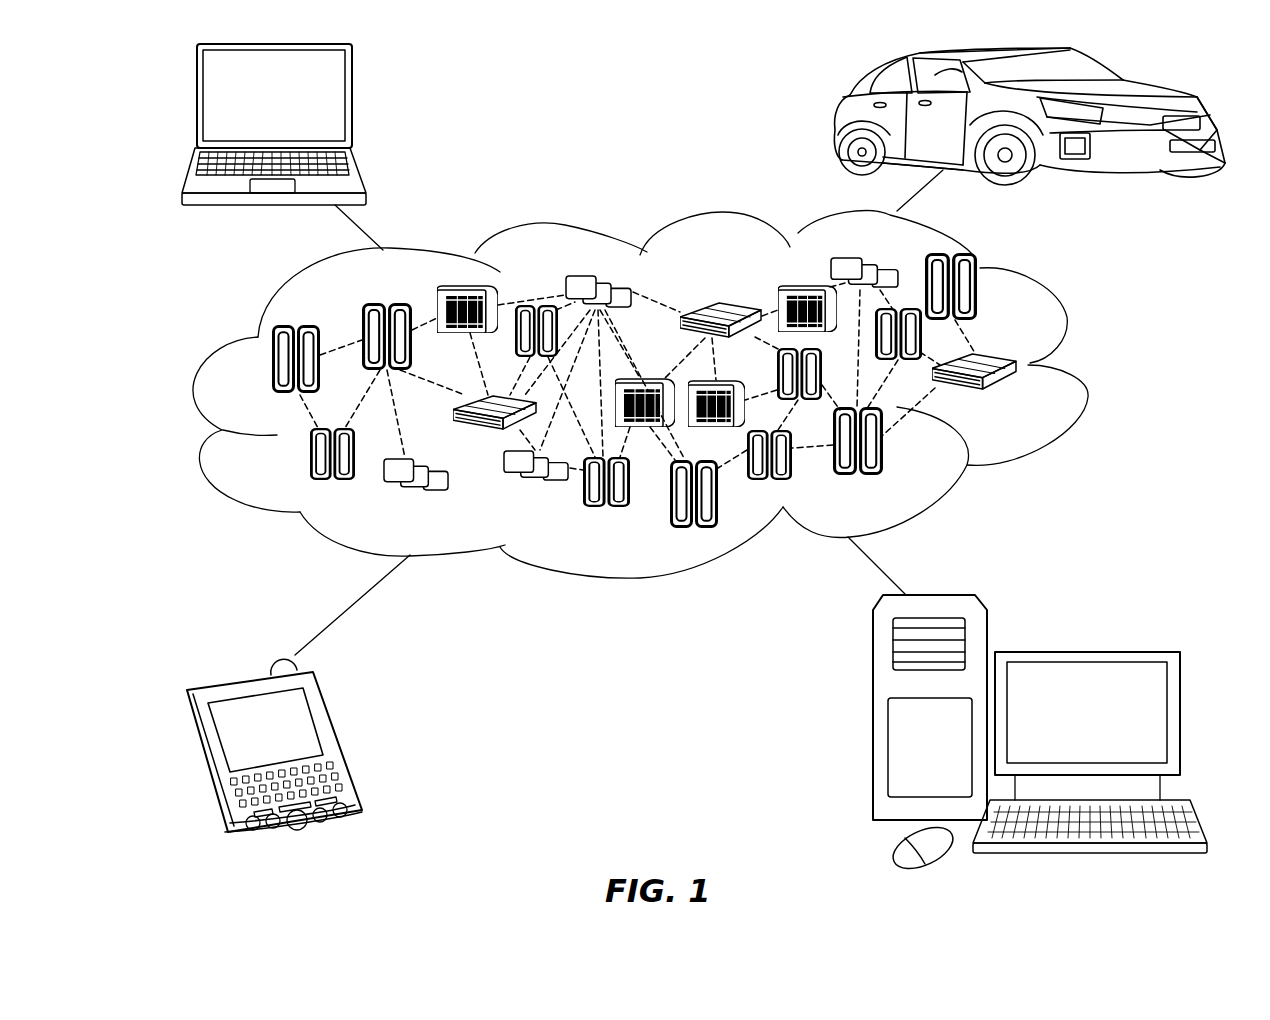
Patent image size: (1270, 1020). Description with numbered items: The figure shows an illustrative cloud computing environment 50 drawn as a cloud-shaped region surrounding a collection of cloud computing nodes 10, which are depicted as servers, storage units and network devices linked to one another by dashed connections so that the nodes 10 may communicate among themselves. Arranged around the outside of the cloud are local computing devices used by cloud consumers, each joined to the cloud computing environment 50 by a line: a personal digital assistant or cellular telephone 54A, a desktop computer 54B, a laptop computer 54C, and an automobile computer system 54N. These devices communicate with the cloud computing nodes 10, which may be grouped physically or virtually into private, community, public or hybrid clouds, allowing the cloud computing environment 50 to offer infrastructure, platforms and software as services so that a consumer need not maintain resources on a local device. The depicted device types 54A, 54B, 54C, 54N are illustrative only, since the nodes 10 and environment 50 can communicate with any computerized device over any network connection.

The cloud computing nodes 10 is at (706, 391).
The cloud computing environment 50 is at (1085, 368).
The personal digital assistant (PDA) or cellular telephone 54A is at (343, 744).
The desktop computer 54B is at (1083, 650).
The laptop computer 54C is at (352, 103).
The automobile computer system 54N is at (840, 121).